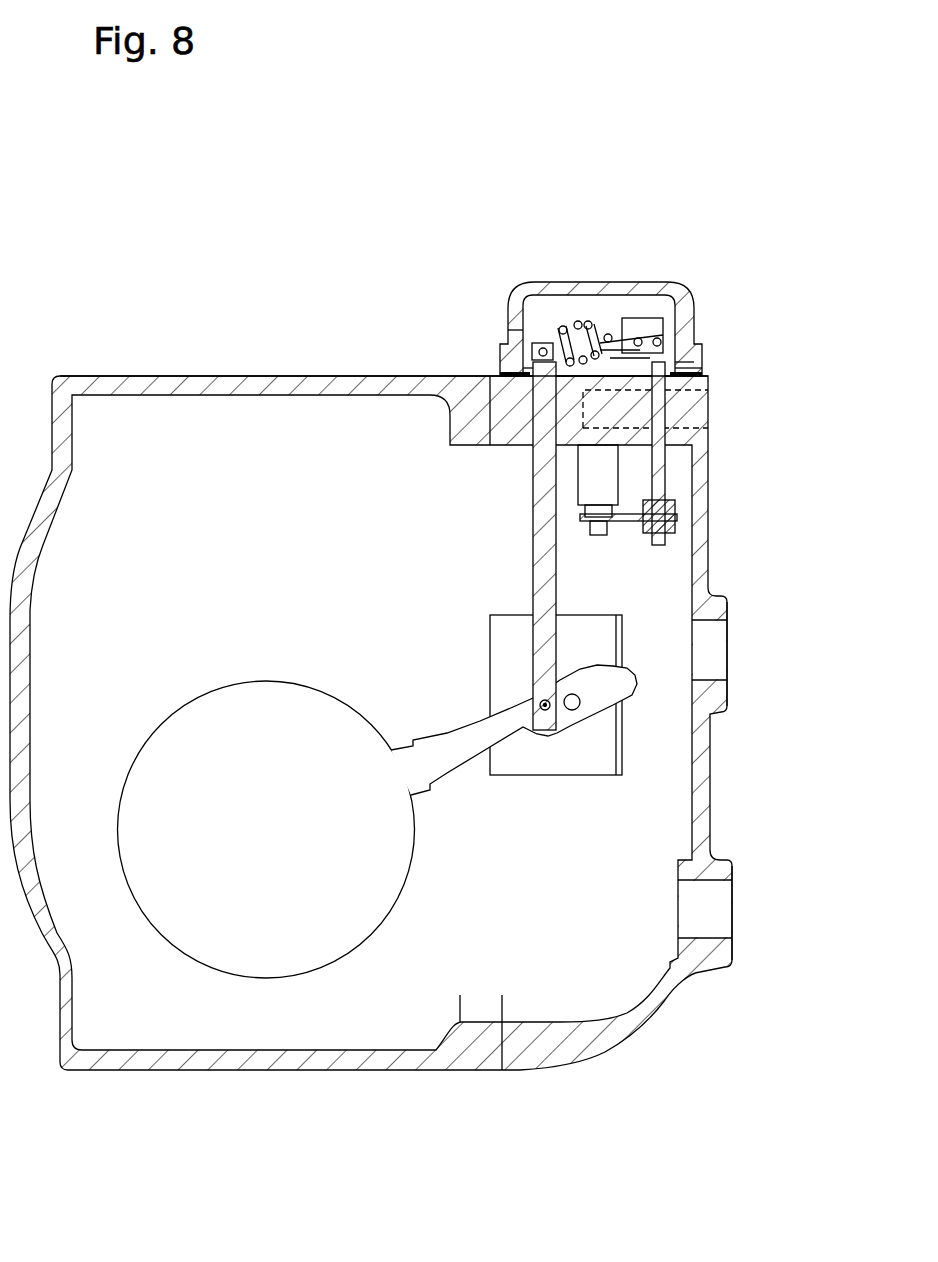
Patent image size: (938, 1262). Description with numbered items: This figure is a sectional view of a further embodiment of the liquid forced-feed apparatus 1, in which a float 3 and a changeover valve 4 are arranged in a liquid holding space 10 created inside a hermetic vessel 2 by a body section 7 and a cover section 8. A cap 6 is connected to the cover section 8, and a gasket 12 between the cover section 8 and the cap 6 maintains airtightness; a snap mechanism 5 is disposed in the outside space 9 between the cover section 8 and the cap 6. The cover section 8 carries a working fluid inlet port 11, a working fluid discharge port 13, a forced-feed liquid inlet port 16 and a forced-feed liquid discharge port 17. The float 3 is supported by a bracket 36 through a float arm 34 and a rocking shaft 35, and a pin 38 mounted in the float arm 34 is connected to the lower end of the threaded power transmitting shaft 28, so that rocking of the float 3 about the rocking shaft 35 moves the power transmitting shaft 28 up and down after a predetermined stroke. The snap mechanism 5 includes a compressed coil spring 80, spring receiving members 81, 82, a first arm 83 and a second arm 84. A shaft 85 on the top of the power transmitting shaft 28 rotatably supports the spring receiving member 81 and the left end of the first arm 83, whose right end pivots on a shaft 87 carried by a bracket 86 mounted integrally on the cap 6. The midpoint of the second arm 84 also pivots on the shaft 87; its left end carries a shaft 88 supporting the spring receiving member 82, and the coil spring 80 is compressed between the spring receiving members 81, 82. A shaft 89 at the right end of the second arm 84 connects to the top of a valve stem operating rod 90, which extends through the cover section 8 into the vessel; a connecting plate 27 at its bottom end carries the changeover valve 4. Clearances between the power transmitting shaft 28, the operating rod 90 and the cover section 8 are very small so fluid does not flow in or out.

The fuel tank assembly 1 is at (193, 312).
The hermetic vessel 2 is at (330, 308).
The float 3 is at (153, 730).
The changeover valve 4 is at (618, 550).
The snap mechanism 5 is at (605, 324).
The cap 6 is at (705, 370).
The body section 7 is at (84, 376).
The cover section 8 is at (697, 462).
The outside space 9 is at (518, 290).
The liquid holding space 10 is at (190, 521).
The working fluid inlet port 11 is at (699, 411).
The gasket 12 is at (500, 375).
The working fluid discharge port 13 is at (694, 415).
The forced-feed liquid inlet port 16 is at (722, 653).
The forced-feed liquid discharge port 17 is at (722, 913).
The connecting plate 27 is at (687, 520).
The power transmitting shaft 28 is at (545, 585).
The float arm 34 is at (447, 745).
The rocking shaft 35 is at (574, 712).
The bracket 36 is at (507, 790).
The shaft (pin) 38 is at (542, 702).
The coil spring 80 is at (560, 322).
The spring receiving member 81 is at (534, 338).
The spring receiving member 82 is at (588, 318).
The first arm 83 is at (660, 332).
The second arm 84 is at (685, 340).
The shaft 85 is at (510, 328).
The bracket 86 is at (705, 375).
The shaft 87 is at (700, 350).
The shaft 88 is at (632, 325).
The shaft 89 is at (705, 360).
The valve stem operating rod 90 is at (673, 490).